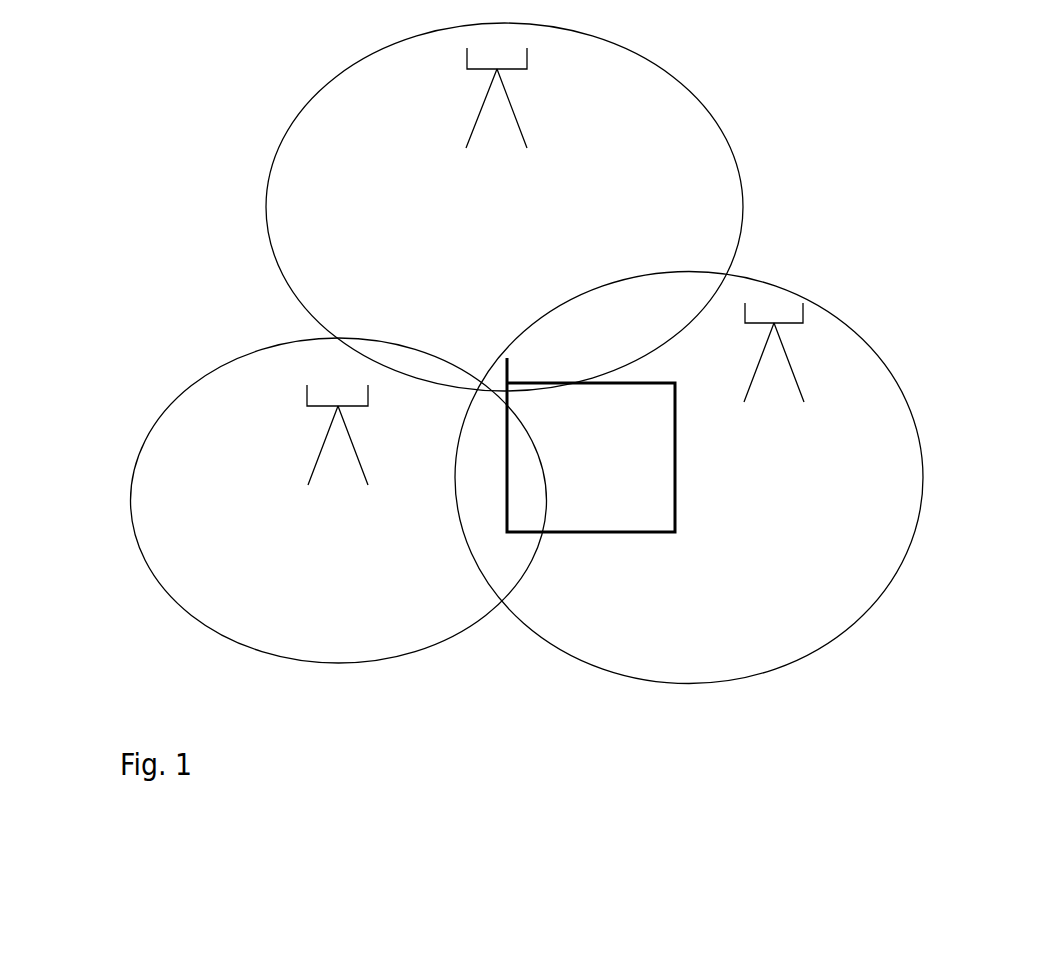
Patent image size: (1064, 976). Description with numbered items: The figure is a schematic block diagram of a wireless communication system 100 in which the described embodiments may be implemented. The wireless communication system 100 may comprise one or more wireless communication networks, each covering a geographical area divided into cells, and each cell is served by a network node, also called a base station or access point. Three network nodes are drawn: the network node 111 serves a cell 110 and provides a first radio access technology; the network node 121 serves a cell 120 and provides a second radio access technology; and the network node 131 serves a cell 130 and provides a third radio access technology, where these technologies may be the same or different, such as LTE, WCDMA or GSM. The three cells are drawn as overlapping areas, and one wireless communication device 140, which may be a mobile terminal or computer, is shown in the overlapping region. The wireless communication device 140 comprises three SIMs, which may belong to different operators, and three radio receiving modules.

The wireless communication system 100 is at (965, 583).
The cell 110 is at (501, 259).
The network node 111 is at (467, 53).
The cell 120 is at (258, 566).
The network node 121 is at (307, 398).
The cell 130 is at (858, 515).
The network node 131 is at (745, 318).
The wireless communication device 140 is at (591, 445).